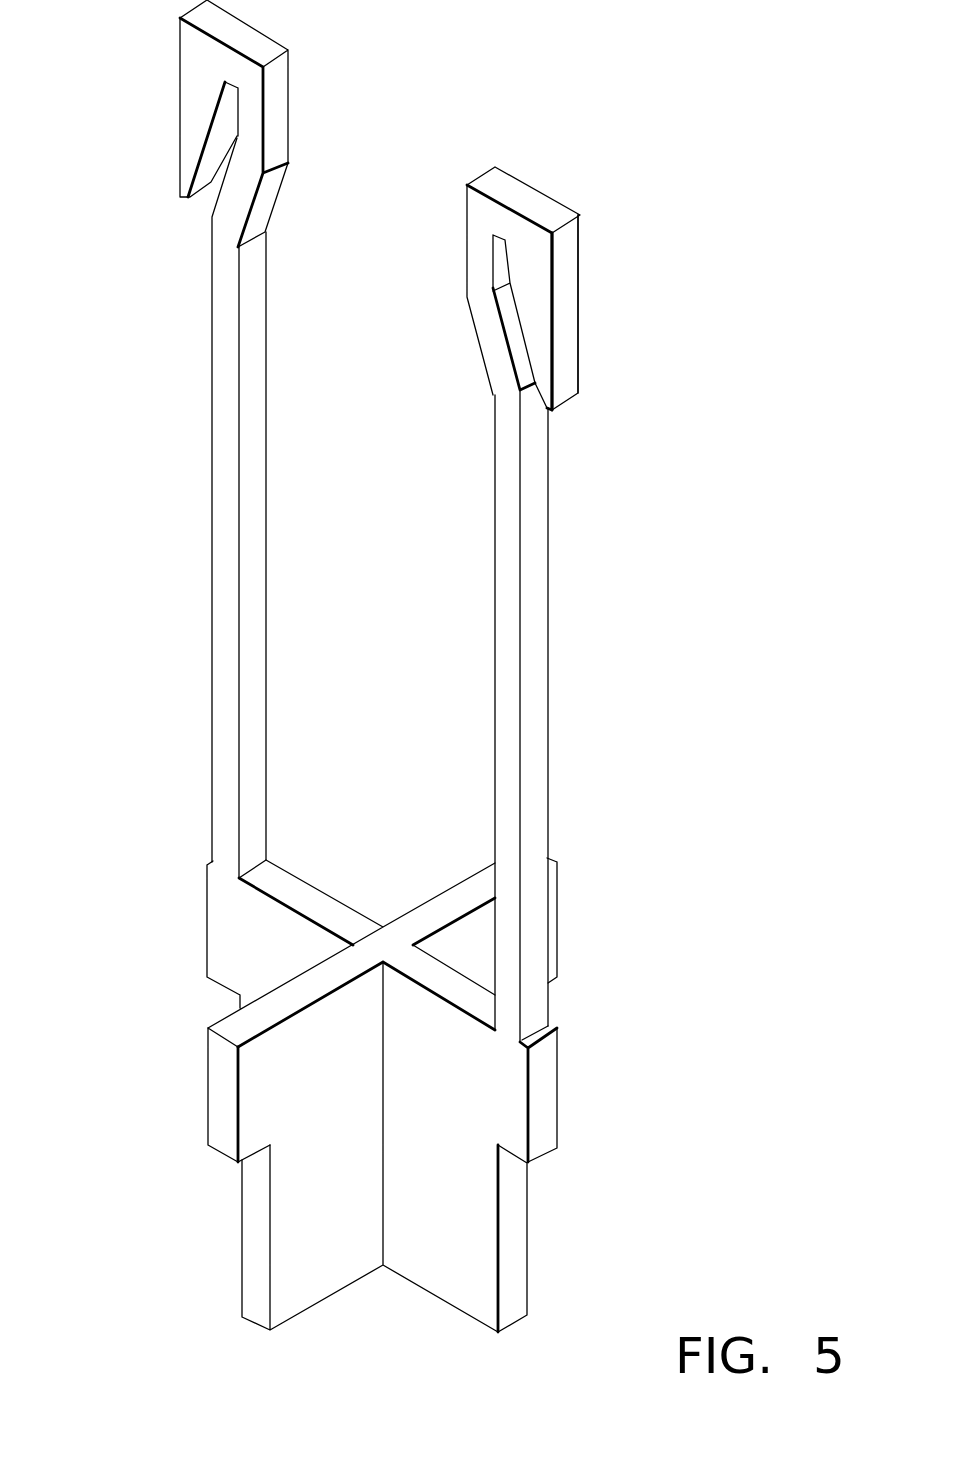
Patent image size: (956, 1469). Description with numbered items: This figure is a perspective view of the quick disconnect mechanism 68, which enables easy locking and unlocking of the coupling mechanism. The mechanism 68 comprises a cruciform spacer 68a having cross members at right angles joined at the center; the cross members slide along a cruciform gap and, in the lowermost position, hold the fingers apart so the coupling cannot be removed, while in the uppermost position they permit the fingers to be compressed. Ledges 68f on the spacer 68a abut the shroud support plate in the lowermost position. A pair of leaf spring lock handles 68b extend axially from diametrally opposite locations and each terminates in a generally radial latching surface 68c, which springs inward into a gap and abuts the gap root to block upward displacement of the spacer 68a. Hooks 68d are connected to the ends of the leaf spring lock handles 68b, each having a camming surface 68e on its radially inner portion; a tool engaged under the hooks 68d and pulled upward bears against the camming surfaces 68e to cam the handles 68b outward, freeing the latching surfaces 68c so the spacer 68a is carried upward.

The quick disconnect mechanism 68 is at (162, 426).
The cruciform spacer 68a is at (248, 1247).
The leaf spring lock handle 68b is at (222, 614).
The latching surface 68c is at (490, 183).
The hook 68d is at (560, 272).
The camming surface 68e is at (212, 160).
The ledge 68f is at (217, 1095).